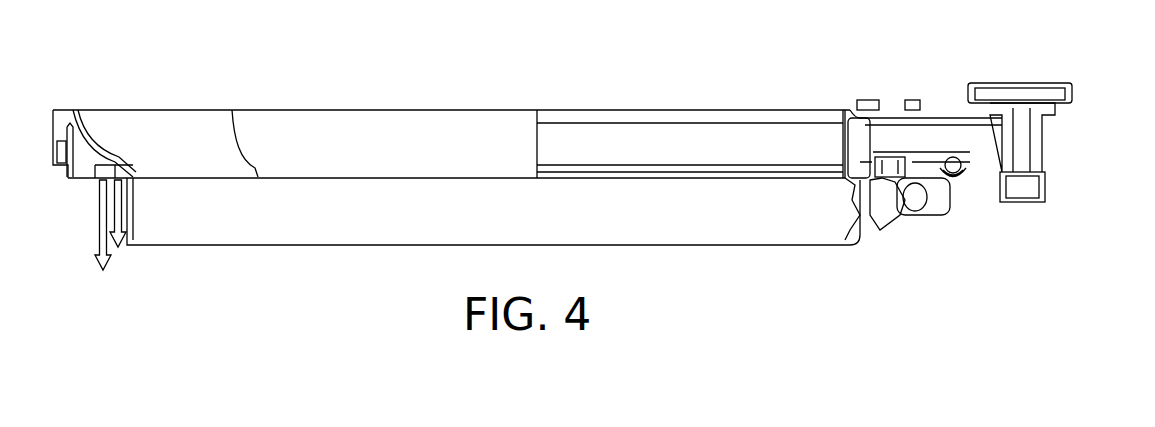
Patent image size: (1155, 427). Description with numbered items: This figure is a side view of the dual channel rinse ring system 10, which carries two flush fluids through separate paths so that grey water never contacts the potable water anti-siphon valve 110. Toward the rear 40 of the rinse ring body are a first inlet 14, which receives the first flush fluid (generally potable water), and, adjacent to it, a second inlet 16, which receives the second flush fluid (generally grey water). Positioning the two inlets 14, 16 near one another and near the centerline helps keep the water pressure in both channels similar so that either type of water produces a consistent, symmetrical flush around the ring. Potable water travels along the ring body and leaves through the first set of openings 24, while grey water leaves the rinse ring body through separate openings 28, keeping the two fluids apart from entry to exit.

The dual channel rinse ring system 10 is at (631, 77).
The rear 40 is at (1097, 72).
The potable water anti-siphon valve 110 is at (1028, 142).
The first inlet 14 is at (1033, 196).
The second inlet 16 is at (917, 200).
The first set of a plurality of openings 24 is at (899, 242).
The separate openings 28 is at (827, 245).